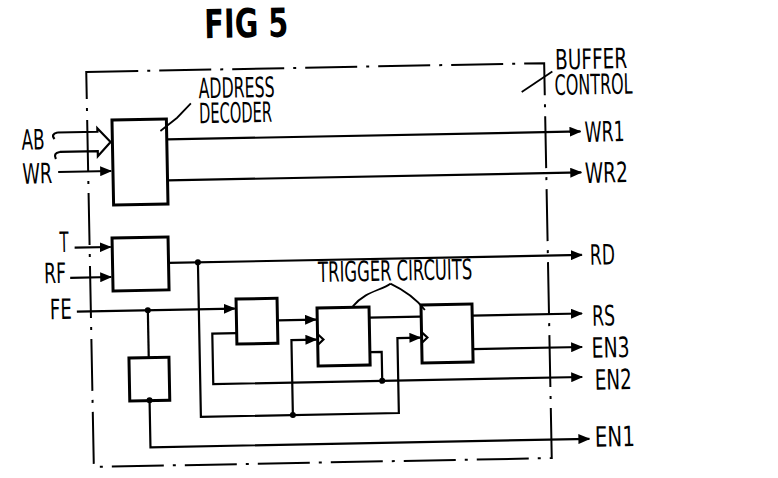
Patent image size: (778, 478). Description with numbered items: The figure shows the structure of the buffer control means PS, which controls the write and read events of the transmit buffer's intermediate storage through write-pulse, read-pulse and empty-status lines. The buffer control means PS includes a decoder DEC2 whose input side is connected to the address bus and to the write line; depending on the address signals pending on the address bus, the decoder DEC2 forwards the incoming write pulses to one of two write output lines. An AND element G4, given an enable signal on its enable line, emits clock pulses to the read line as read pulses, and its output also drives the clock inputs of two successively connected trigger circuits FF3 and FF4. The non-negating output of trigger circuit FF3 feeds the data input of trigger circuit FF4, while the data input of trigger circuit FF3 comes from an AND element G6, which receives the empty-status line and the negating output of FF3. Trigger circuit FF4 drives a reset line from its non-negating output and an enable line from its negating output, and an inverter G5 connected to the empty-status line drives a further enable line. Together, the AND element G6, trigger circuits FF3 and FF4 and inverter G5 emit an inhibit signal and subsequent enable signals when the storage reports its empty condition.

The buffer control means PS is at (475, 72).
The decoder DEC2 is at (140, 96).
The AND element G4 is at (158, 247).
The inverter G5 is at (135, 391).
The AND element G6 is at (262, 297).
The trigger circuit FF3 is at (343, 336).
The trigger circuit FF4 is at (447, 333).